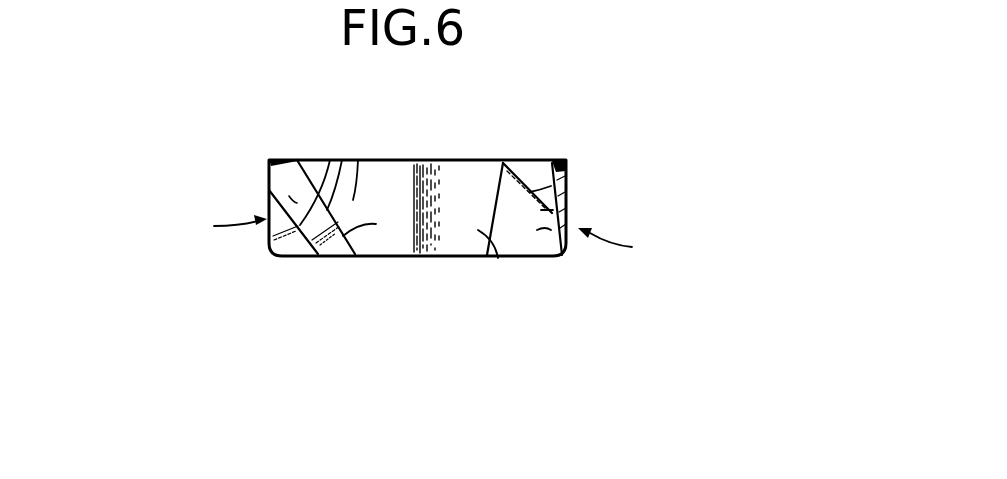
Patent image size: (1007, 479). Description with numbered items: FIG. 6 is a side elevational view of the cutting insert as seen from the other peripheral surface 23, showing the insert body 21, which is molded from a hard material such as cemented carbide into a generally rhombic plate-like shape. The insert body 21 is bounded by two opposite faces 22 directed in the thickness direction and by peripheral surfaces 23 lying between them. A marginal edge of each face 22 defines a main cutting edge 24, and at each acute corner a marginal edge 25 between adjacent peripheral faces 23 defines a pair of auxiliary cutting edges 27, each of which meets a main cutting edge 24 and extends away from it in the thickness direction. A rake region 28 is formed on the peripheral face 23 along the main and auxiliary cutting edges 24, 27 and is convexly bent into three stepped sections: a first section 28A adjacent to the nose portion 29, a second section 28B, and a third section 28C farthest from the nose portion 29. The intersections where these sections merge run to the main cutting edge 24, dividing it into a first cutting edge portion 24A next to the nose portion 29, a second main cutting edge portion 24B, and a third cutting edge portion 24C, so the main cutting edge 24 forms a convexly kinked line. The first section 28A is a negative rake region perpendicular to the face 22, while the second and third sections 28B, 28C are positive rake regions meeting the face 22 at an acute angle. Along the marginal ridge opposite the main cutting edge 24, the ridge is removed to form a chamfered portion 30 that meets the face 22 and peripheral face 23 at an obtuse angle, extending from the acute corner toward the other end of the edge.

The insert body 21 is at (746, 136).
The face 22 is at (480, 148).
The peripheral surface 23 is at (516, 158).
The main cutting edge 24 is at (268, 158).
The first cutting edge portion 24A is at (300, 258).
The second main cutting edge portion 24B is at (340, 258).
The third cutting edge portion 24C is at (383, 258).
The marginal edge 25 is at (265, 210).
The auxiliary cutting edge 27 is at (262, 170).
The rake region 28 is at (432, 73).
The first section 28A is at (330, 160).
The second section 28B is at (342, 160).
The third section 28C is at (358, 160).
The nose portion 29 is at (270, 268).
The chamfered portion 30 is at (286, 158).